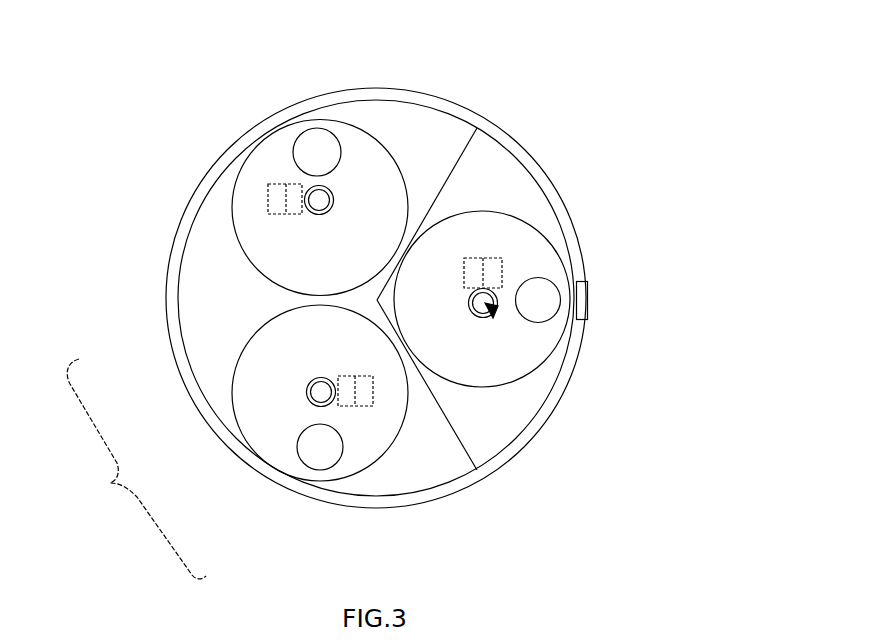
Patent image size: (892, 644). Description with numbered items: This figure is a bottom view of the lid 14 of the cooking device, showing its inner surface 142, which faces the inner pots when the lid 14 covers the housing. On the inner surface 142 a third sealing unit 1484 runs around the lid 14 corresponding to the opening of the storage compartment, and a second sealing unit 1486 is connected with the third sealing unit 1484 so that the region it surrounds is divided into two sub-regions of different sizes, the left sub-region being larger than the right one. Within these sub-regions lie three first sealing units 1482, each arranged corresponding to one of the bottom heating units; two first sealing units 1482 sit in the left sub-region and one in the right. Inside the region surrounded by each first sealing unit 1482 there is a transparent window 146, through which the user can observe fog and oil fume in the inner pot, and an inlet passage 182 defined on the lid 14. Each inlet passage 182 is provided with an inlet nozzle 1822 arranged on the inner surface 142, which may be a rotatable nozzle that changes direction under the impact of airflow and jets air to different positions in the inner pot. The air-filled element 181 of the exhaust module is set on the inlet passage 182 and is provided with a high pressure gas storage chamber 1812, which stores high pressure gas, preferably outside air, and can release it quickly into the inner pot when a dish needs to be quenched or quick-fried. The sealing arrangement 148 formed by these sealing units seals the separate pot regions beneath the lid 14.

The lid 14 is at (542, 162).
The inner surface 142 is at (533, 207).
The transparent window 146 is at (322, 142).
The receiving structure 148 is at (136, 469).
The first sealing unit 1482 is at (240, 425).
The third sealing unit 1484 is at (178, 318).
The second sealing unit 1486 is at (465, 450).
The air-filled element 181 is at (502, 265).
The high pressure gas storage chamber 1812 is at (502, 258).
The inlet passage 182 is at (497, 316).
The inlet nozzle 1822 is at (500, 308).